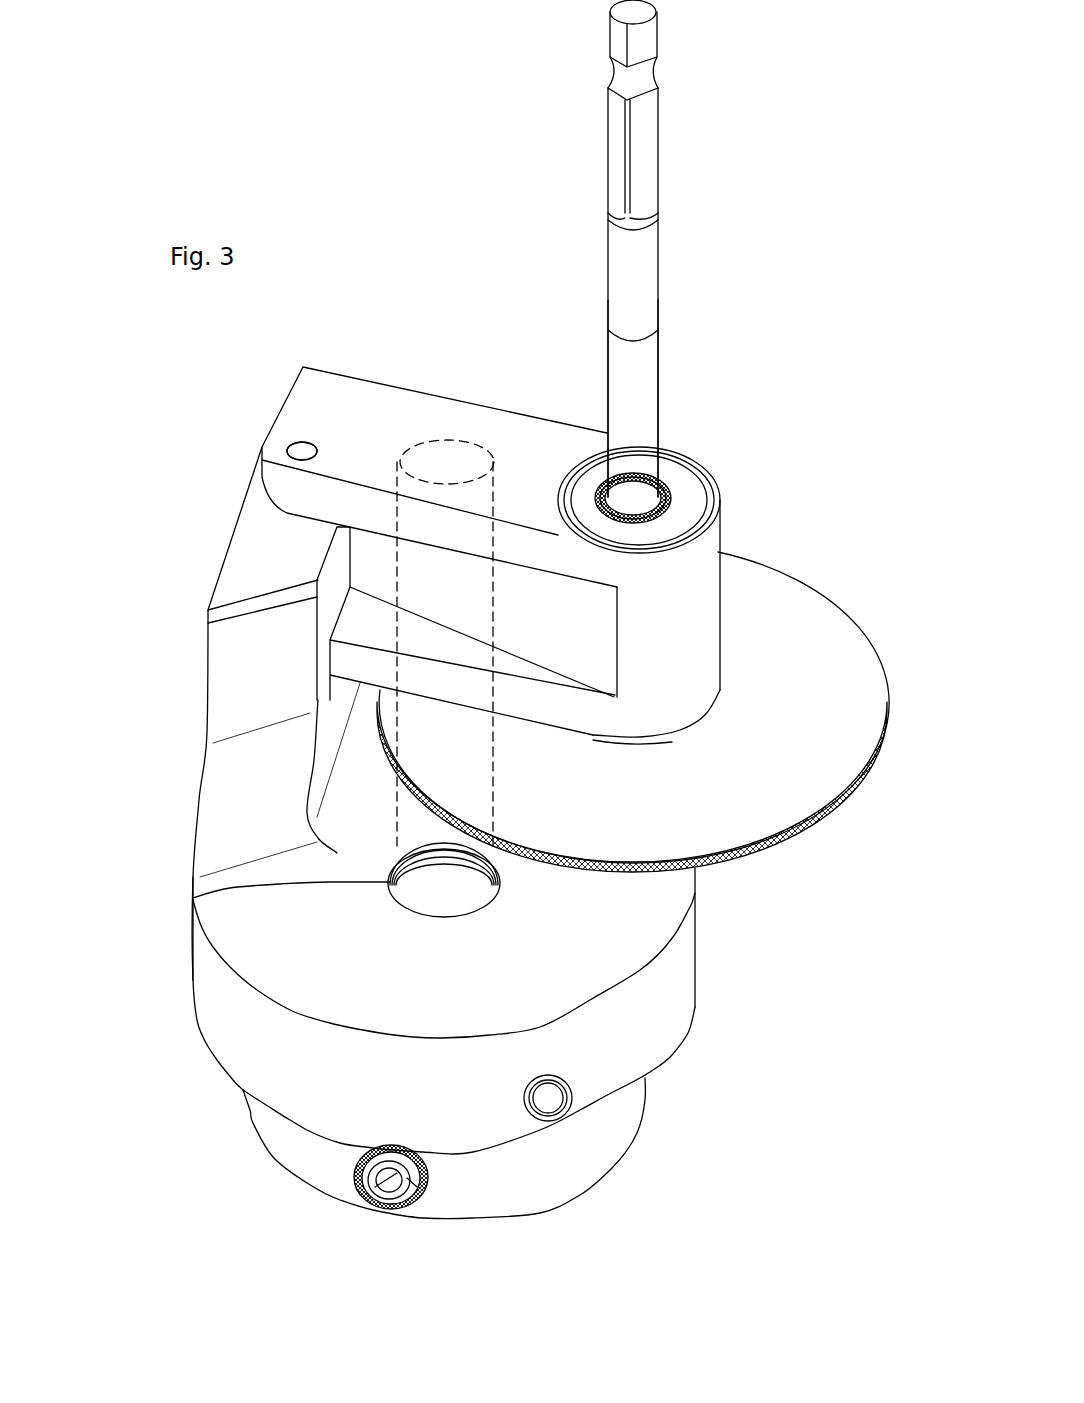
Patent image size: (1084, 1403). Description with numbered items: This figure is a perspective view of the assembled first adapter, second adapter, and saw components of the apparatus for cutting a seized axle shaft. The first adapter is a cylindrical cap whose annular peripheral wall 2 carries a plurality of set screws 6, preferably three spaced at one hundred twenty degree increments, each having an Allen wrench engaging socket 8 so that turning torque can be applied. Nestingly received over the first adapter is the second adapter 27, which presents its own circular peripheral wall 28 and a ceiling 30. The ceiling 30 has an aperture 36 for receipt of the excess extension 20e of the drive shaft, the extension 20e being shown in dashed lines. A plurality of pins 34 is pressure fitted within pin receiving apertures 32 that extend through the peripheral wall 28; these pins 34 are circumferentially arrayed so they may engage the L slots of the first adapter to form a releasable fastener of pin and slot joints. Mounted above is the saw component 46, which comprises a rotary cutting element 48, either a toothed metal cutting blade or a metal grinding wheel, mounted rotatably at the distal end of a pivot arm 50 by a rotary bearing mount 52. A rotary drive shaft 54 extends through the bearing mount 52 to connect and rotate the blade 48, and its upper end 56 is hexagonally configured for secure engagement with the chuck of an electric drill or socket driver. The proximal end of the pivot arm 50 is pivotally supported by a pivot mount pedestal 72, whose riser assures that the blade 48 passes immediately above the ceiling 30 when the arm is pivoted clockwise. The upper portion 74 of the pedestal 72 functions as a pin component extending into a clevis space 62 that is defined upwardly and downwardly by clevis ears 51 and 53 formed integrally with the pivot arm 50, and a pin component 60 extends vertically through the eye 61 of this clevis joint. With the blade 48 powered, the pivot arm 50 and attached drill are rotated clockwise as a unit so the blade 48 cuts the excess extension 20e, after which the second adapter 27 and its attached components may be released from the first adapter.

The annular peripheral wall 2 is at (508, 1190).
The set screws 6 is at (417, 1187).
The Allen wrench engaging sockets 8 is at (383, 1187).
The excess extension of drive shaft 20e is at (463, 452).
The second adapter 27 is at (229, 1019).
The circular peripheral wall 28 is at (678, 993).
The ceiling 30 is at (617, 915).
The pin receiving apertures 32 is at (573, 1093).
The pins 34 is at (547, 1103).
The aperture 36 is at (432, 893).
The saw component 46 is at (718, 427).
The rotary cutting element 48 is at (787, 637).
The pivot arm 50 is at (442, 417).
The clevis ear 51 is at (282, 495).
The rotary bearing mount 52 is at (682, 487).
The clevis ear 53 is at (448, 685).
The rotary drive shaft 54 is at (627, 390).
The upper end of drive shaft 56 is at (652, 152).
The pin component 60 is at (297, 452).
The eye 61 is at (306, 445).
The clevis space 62 is at (437, 642).
The pivot mount pedestal 72 is at (268, 688).
The upper portion of pedestal mount 74 is at (263, 547).